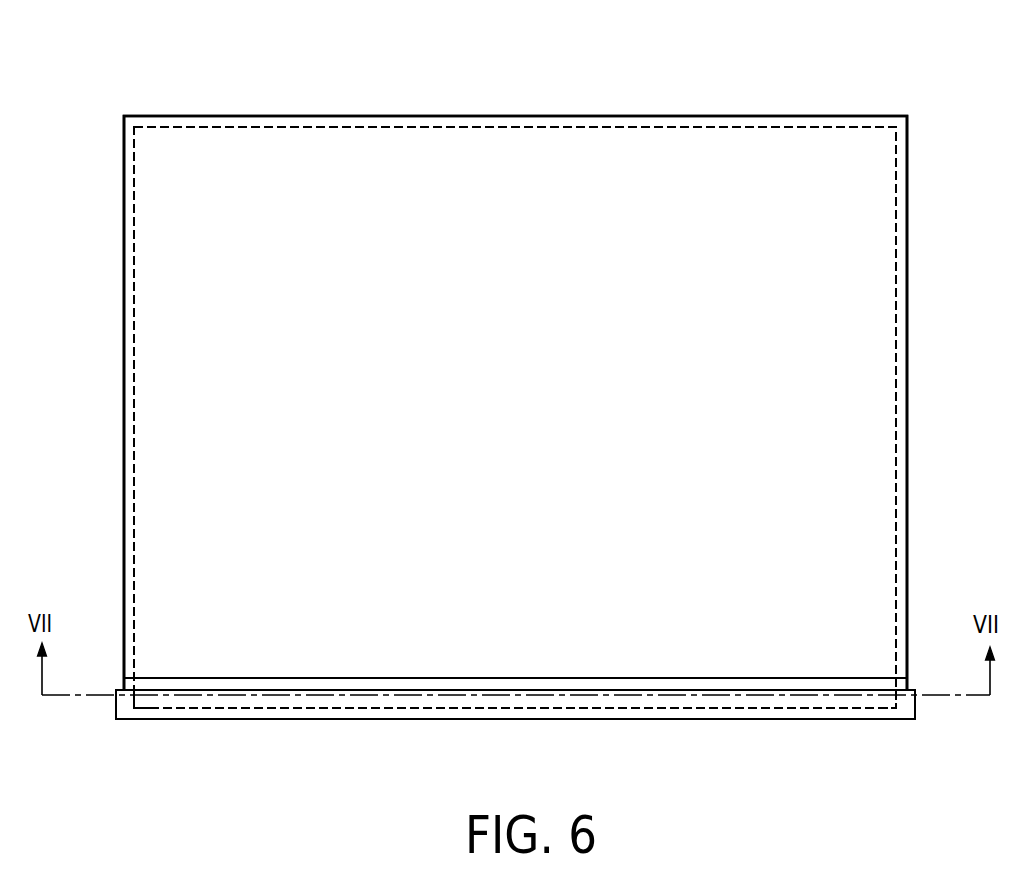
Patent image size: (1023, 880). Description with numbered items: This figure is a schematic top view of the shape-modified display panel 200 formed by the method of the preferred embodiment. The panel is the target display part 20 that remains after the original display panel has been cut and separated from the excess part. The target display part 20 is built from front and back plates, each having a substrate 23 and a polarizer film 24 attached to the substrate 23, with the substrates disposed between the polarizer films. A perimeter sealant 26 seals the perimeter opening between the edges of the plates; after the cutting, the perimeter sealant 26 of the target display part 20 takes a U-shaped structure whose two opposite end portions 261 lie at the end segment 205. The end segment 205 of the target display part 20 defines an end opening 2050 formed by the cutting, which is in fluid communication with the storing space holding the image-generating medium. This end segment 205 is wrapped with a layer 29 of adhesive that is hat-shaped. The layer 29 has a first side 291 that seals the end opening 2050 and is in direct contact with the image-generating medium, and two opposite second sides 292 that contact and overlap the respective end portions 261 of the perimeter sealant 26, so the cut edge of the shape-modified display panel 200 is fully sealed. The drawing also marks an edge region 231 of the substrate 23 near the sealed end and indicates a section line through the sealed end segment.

The shape-modified display panel 200 is at (236, 84).
The target display part 20 is at (678, 117).
The perimeter sealant 26 is at (132, 380).
The substrate 23 is at (697, 682).
The edge of frame 231 is at (778, 683).
The polarizer film 24 is at (248, 690).
The layer of the adhesive 29 is at (737, 720).
The first side 291 is at (507, 720).
The second sides 292 is at (915, 710).
The end portions 261 is at (132, 702).
The end segment 205 is at (327, 703).
The end opening 2050 is at (625, 710).